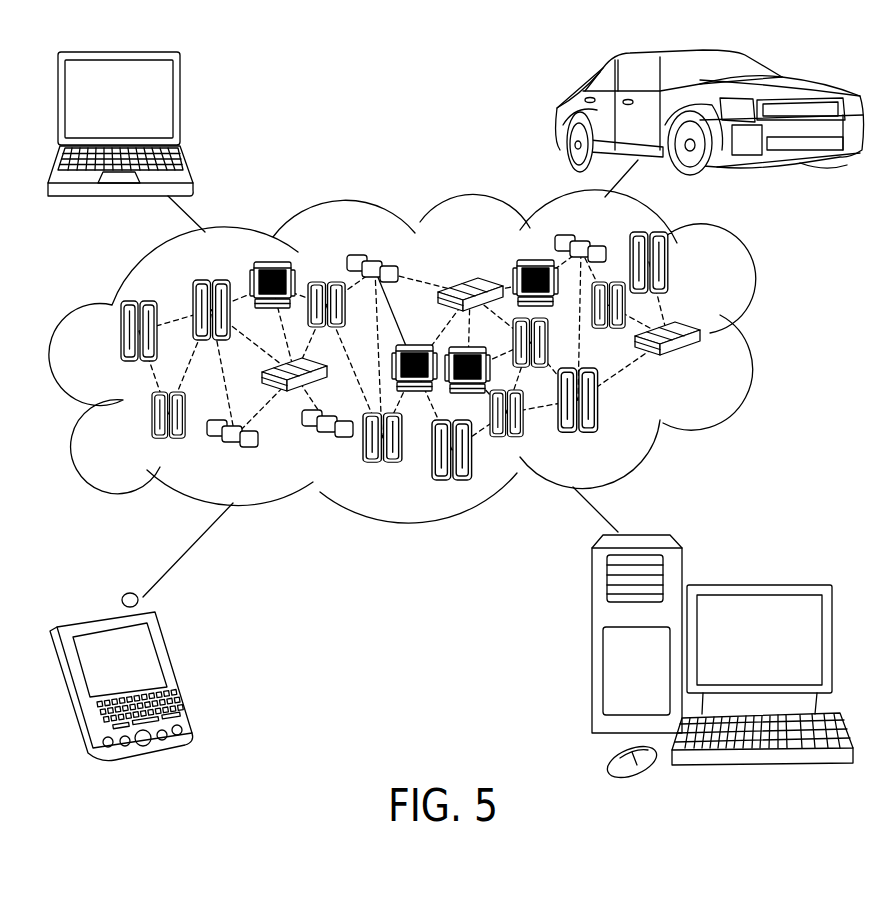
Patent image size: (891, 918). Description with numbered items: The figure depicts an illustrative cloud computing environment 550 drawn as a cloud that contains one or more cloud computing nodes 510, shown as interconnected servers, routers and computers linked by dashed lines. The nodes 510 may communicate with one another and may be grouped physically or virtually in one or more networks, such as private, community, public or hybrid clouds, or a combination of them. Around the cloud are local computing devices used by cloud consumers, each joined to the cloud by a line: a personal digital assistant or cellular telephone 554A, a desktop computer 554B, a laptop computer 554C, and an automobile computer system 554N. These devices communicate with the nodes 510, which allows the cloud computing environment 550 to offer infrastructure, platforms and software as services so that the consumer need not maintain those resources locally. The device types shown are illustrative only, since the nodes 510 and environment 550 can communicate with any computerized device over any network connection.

The cloud computing nodes 510 is at (708, 364).
The cloud computing environment 550 is at (753, 335).
The personal digital assistant (PDA) or cellular telephone 554A is at (177, 670).
The desktop computer 554B is at (755, 583).
The laptop computer 554C is at (180, 107).
The automobile computer system 554N is at (560, 115).